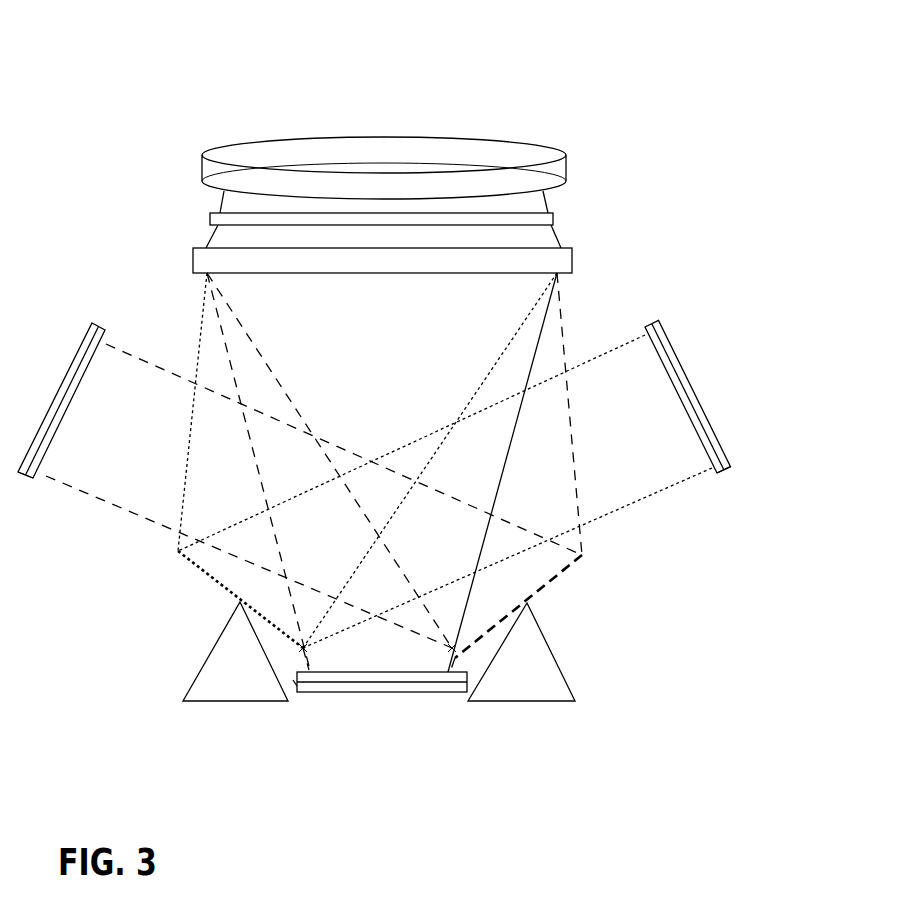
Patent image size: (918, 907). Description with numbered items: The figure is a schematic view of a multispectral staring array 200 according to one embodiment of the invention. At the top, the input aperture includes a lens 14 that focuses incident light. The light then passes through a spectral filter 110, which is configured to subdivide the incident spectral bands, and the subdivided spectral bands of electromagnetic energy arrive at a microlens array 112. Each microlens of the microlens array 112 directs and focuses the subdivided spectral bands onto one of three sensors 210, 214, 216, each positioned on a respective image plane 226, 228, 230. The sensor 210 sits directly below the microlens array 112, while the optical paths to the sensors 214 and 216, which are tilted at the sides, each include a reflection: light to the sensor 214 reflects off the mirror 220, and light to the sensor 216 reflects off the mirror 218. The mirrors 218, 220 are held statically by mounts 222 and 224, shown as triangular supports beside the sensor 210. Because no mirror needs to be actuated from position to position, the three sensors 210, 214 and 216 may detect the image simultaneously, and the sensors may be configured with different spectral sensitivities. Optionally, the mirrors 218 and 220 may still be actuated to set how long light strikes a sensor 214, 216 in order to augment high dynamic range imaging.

The optical system 200 is at (627, 75).
The lens 14 is at (479, 152).
The spectral filter 110 is at (552, 218).
The microlens array 112 is at (563, 262).
The sensor 210 is at (370, 687).
The sensor 214 is at (680, 370).
The sensor 216 is at (72, 373).
The mirror 218 is at (537, 595).
The mirror 220 is at (212, 580).
The mount 222 is at (240, 692).
The mount 224 is at (537, 693).
The image plane 226 is at (297, 684).
The image plane 228 is at (729, 473).
The image plane 230 is at (26, 481).